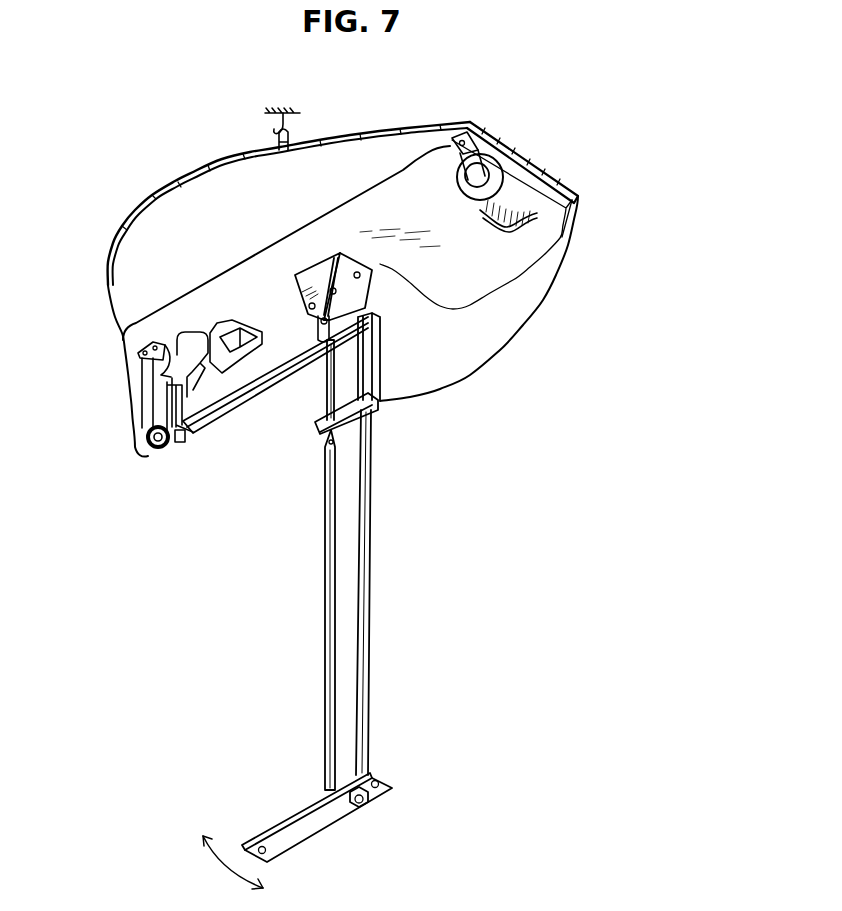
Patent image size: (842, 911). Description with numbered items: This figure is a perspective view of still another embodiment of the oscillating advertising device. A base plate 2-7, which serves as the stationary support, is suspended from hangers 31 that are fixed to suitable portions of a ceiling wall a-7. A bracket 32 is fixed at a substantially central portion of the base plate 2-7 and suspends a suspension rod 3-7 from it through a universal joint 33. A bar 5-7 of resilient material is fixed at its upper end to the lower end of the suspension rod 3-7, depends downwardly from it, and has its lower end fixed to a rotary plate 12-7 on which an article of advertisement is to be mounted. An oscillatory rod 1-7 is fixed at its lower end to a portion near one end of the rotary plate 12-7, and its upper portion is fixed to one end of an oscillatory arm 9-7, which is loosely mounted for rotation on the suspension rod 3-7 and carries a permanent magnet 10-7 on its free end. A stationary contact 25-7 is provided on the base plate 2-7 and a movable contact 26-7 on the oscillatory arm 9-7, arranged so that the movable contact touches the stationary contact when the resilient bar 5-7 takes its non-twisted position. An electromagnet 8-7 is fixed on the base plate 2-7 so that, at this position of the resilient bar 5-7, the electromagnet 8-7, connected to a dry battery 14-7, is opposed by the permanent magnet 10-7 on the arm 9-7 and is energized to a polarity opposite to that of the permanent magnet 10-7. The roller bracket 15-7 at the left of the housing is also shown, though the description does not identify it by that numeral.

The ceiling wall a-7 is at (283, 111).
The hanger 31 is at (288, 134).
The dry battery 14-7 is at (527, 183).
The base plate 2-7 is at (507, 331).
The bracket 32 is at (325, 272).
The movable contact 26-7 is at (223, 340).
The universal joint 33 is at (321, 338).
The suspension rod 3-7 is at (333, 367).
The stationary contact 25-7 is at (258, 360).
The oscillatory arm 9-7 is at (217, 410).
The electromagnet 8-7 is at (170, 448).
The permanent magnet 10-7 is at (180, 443).
The roller bracket 15-7 is at (150, 445).
The oscillatory rod 1-7 is at (366, 485).
The bar of resilient material 5-7 is at (330, 557).
The rotary plate 12-7 is at (340, 807).